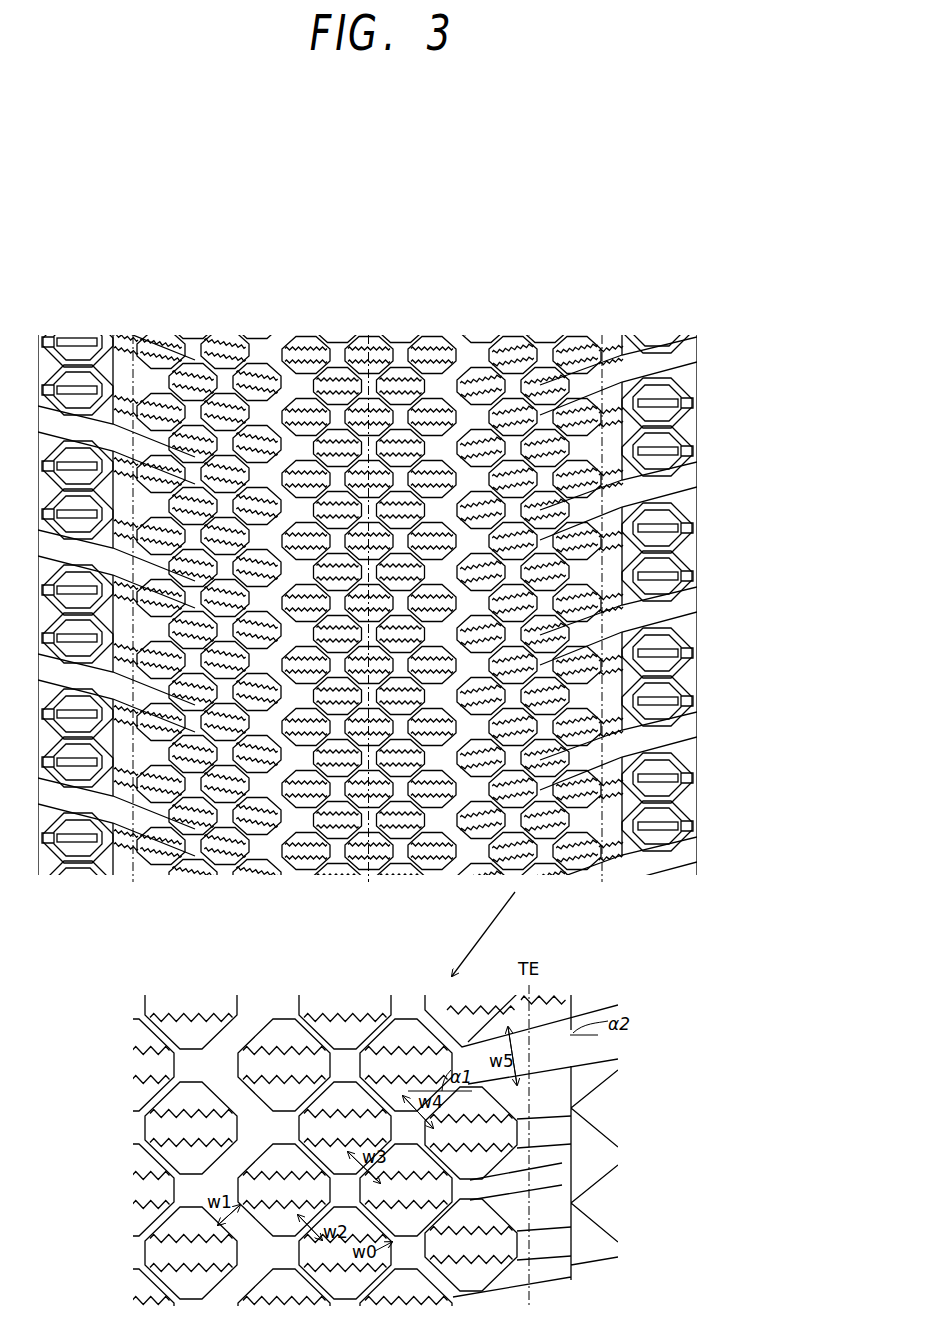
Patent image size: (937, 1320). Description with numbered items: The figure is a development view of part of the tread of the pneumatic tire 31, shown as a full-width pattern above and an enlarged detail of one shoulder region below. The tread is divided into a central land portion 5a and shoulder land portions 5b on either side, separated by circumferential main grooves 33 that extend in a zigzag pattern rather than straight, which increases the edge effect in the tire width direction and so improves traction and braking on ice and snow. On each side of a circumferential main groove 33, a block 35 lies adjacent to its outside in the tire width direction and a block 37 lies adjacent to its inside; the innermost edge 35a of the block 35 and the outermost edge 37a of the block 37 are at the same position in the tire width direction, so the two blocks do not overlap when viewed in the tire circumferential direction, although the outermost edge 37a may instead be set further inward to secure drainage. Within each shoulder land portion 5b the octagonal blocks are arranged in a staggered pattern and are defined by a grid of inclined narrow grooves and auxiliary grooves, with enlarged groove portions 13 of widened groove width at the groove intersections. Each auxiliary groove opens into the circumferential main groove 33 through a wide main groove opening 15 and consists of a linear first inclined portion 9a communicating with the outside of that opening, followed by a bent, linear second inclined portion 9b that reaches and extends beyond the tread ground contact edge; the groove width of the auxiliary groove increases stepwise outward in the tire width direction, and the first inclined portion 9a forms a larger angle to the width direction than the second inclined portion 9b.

The tire 31 is at (683, 304).
The central land portion 5a is at (445, 292).
The shoulder land portion 5b is at (605, 292).
The circumferential main groove 33 is at (263, 350).
The block 35 is at (253, 355).
The block 37 is at (318, 349).
The enlarged groove portion 13 is at (340, 1068).
The main groove opening 15 is at (290, 1250).
The first inclined portion 9a is at (400, 1138).
The second inclined portion 9b is at (548, 1060).
The innermost edge 35a is at (231, 1068).
The outermost edge 37a is at (237, 1129).